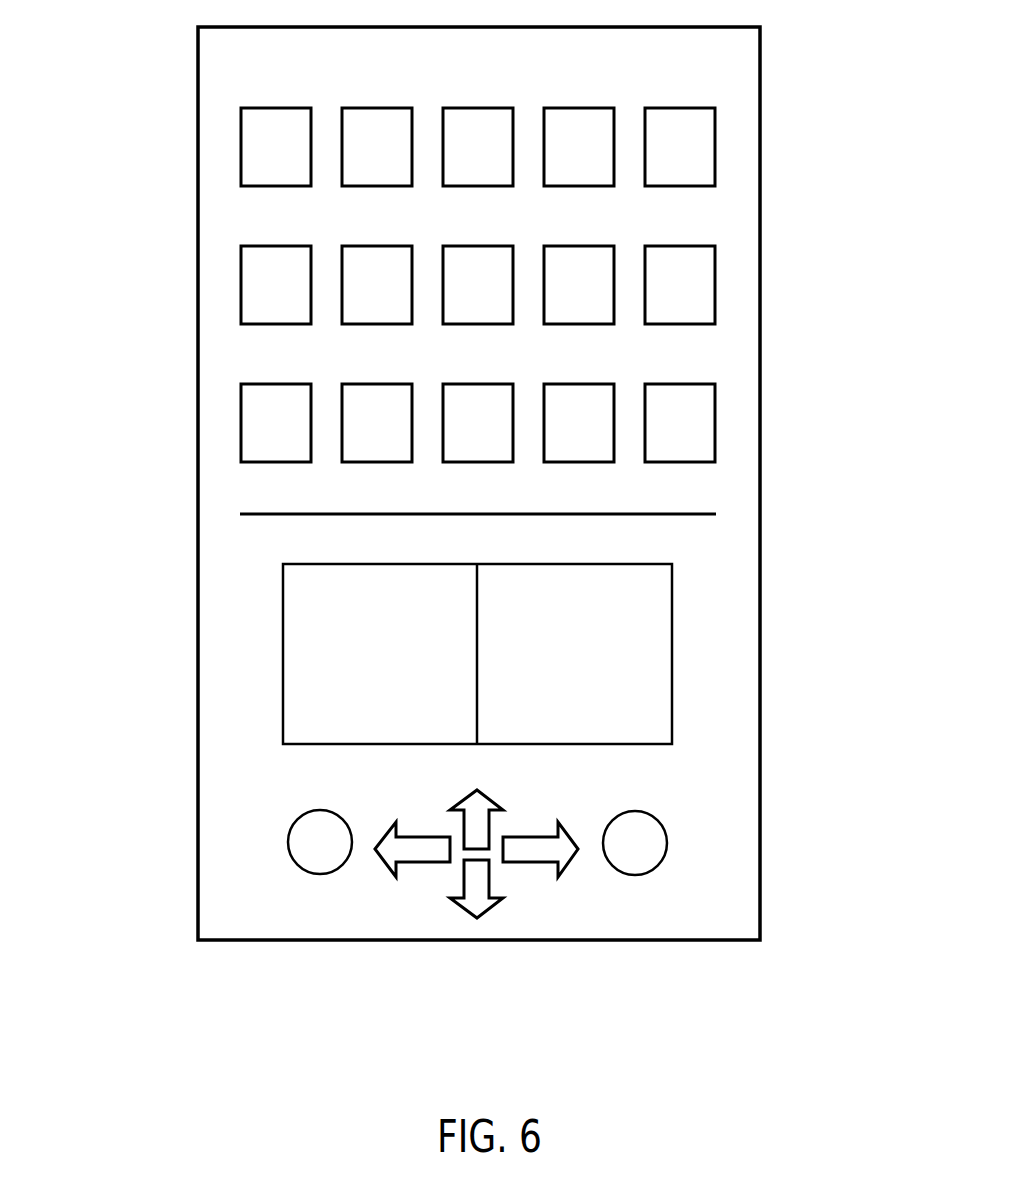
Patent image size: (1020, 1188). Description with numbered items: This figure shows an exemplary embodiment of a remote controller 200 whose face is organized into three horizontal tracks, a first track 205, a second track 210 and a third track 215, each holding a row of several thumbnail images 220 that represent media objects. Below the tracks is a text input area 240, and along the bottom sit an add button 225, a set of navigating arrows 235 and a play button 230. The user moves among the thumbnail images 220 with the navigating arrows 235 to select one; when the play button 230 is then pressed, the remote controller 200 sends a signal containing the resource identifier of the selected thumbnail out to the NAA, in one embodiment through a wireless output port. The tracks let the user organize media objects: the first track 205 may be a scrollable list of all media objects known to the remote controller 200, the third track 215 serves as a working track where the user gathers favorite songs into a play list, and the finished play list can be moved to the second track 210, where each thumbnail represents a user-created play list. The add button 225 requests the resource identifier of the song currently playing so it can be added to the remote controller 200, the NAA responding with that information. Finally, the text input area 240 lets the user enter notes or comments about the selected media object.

The remote controller 200 is at (762, 880).
The first track 205 is at (452, 147).
The second track 210 is at (728, 290).
The third track 215 is at (728, 428).
The thumbnail image 220 is at (179, 147).
The add button 225 is at (318, 851).
The play button 230 is at (638, 864).
The navigating arrows 235 is at (482, 879).
The text input area 240 is at (327, 662).